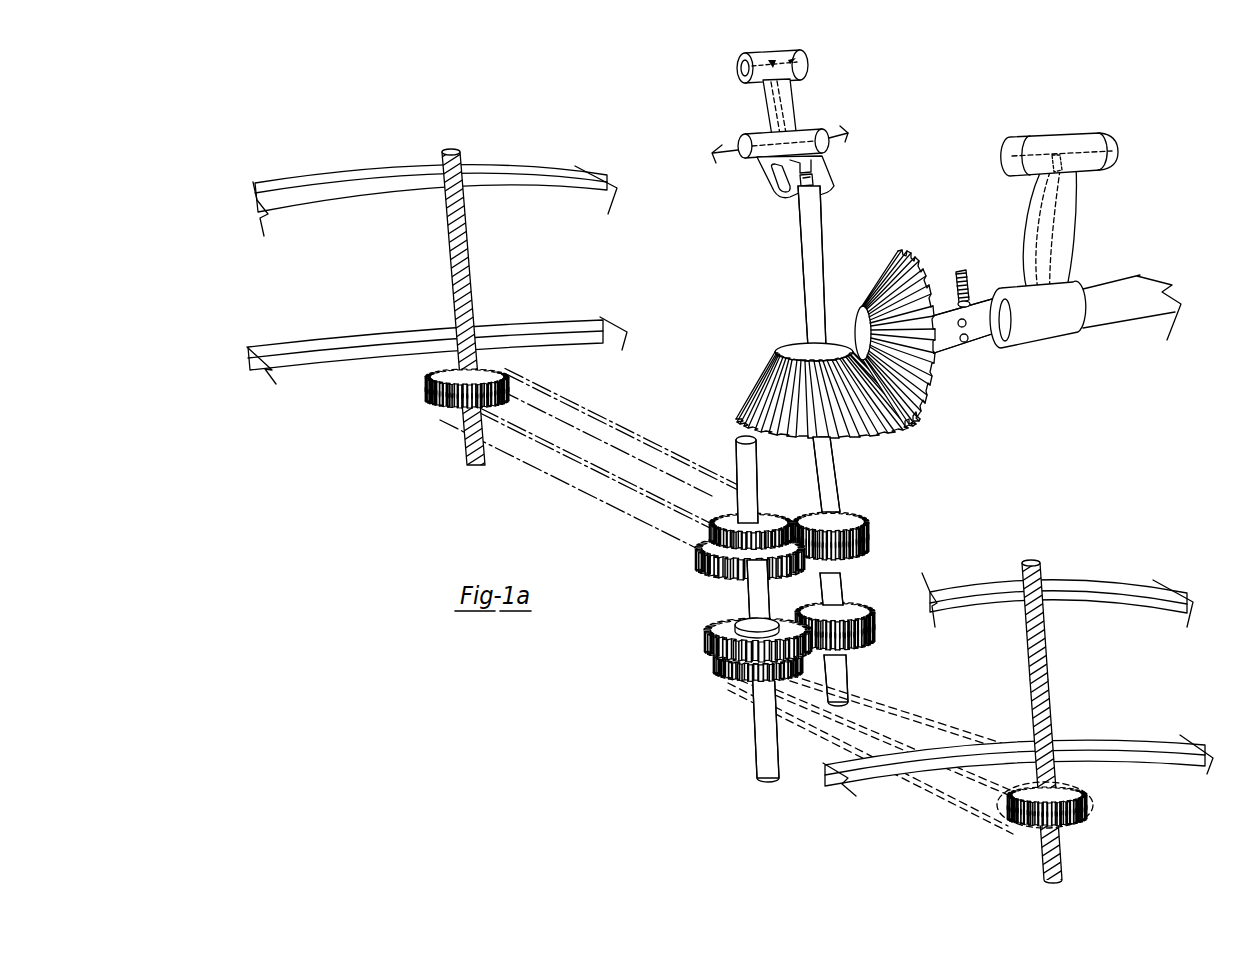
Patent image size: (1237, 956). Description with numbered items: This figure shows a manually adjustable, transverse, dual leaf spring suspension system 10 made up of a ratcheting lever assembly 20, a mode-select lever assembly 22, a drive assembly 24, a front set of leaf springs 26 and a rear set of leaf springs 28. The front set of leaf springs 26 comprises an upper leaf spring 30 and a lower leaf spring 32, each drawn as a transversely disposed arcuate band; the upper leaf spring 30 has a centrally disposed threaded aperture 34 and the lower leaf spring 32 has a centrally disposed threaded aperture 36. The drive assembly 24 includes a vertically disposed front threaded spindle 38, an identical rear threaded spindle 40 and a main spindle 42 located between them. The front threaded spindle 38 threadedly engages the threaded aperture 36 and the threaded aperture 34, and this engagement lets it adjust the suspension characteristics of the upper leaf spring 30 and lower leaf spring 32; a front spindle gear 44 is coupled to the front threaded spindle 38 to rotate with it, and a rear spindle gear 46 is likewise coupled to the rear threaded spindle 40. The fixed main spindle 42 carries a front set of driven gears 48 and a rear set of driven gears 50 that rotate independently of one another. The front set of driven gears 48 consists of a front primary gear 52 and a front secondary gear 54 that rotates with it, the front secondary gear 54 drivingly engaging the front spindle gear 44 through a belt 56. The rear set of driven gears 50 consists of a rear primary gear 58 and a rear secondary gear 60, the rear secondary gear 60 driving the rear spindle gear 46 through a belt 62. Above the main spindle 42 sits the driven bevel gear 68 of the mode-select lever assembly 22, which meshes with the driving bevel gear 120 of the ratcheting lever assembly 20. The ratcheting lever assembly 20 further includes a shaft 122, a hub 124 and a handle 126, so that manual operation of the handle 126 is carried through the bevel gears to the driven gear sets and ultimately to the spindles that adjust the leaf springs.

The suspension system 10 is at (909, 126).
The ratcheting lever assembly 20 is at (1076, 251).
The mode-select lever assembly 22 is at (688, 92).
The drive assembly 24 is at (825, 446).
The front set of leaf springs 26 is at (1018, 705).
The rear set of leaf springs 28 is at (437, 303).
The upper leaf spring 30 is at (1130, 590).
The lower leaf spring 32 is at (1100, 747).
The threaded aperture 34 is at (1060, 585).
The threaded aperture 36 is at (1080, 745).
The front threaded spindle 38 is at (1042, 855).
The rear threaded spindle 40 is at (450, 280).
The main spindle 42 is at (760, 733).
The front spindle gear 44 is at (1088, 790).
The rear spindle gear 46 is at (432, 396).
The front set of driven gears 48 is at (708, 671).
The rear set of driven gears 50 is at (705, 525).
The front primary gear 52 is at (712, 648).
The front secondary gear 54 is at (730, 678).
The belt 56 is at (910, 703).
The rear primary gear 58 is at (703, 555).
The rear secondary gear 60 is at (713, 512).
The belt 62 is at (577, 473).
The driven bevel gear 68 is at (760, 400).
The driving bevel gear 120 is at (876, 264).
The shaft 122 is at (988, 340).
The hub 124 is at (1053, 348).
The handle 126 is at (1060, 140).